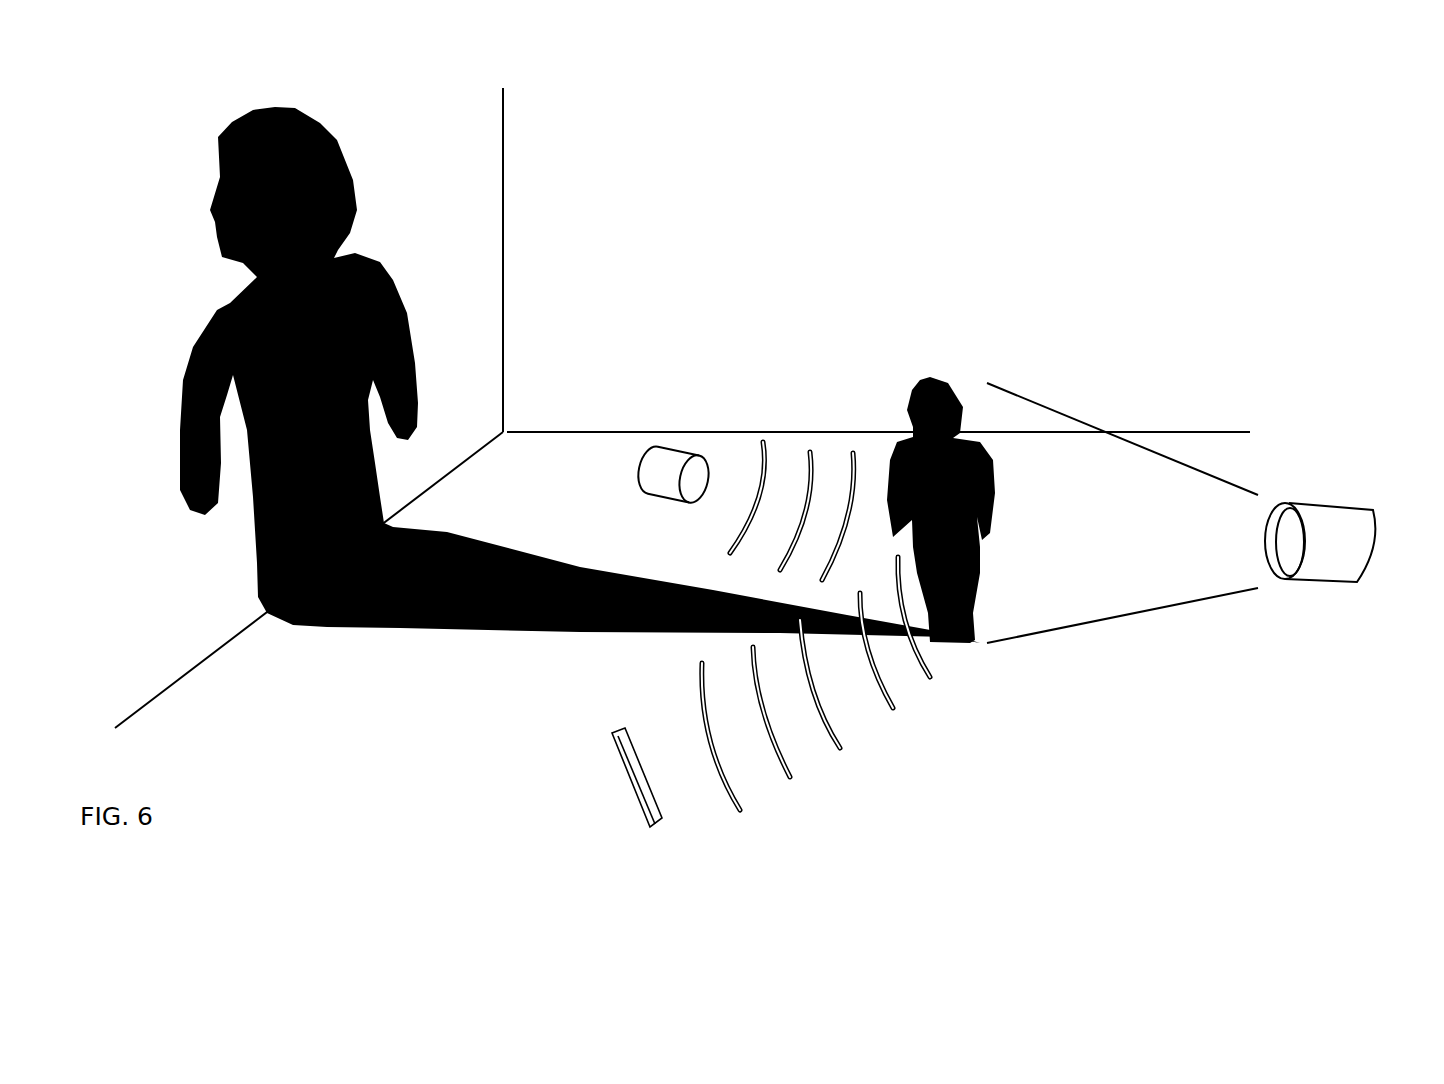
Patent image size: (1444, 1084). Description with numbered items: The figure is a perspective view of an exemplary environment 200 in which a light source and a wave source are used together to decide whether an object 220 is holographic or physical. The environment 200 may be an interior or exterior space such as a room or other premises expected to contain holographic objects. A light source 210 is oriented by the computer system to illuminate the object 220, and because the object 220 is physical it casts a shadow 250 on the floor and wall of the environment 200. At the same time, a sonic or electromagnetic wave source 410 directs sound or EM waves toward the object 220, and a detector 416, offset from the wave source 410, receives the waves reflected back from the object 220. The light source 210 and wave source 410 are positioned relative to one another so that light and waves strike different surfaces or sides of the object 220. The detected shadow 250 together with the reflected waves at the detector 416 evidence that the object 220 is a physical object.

The environment 200 is at (1151, 148).
The shadow 250 is at (278, 110).
The object 220 is at (932, 378).
The wave source 410 is at (683, 445).
The detector 416 is at (610, 735).
The light source 210 is at (1357, 581).